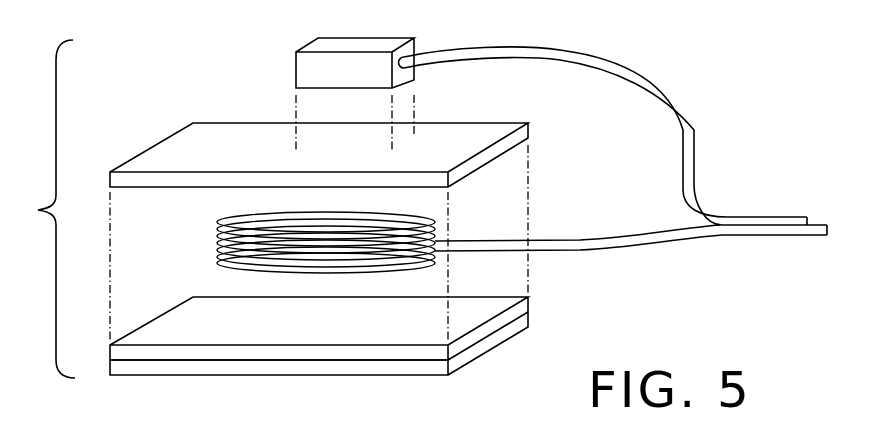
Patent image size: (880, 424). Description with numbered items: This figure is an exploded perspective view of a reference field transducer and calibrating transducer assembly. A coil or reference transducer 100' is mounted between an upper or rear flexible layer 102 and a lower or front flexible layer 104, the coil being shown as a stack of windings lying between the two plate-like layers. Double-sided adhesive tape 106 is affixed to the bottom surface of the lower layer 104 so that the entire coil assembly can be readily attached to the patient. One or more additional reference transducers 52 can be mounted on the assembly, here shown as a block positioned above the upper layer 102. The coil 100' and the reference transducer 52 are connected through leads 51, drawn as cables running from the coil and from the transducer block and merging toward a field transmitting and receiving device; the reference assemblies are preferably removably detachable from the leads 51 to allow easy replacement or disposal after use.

The leads 51 is at (733, 212).
The reference transducer 52 is at (367, 42).
The coil or reference transducer 100' is at (370, 248).
The upper or rear flexible layer 102 is at (512, 148).
The lower or front flexible layer 104 is at (520, 306).
The double-sided adhesive tape 106 is at (422, 376).